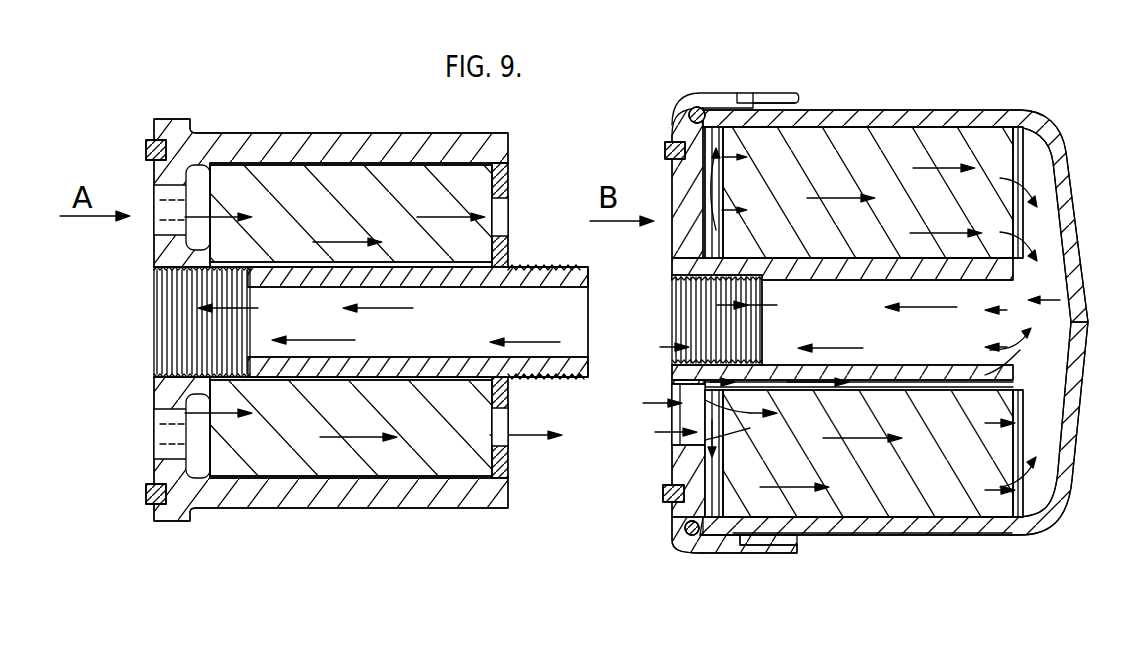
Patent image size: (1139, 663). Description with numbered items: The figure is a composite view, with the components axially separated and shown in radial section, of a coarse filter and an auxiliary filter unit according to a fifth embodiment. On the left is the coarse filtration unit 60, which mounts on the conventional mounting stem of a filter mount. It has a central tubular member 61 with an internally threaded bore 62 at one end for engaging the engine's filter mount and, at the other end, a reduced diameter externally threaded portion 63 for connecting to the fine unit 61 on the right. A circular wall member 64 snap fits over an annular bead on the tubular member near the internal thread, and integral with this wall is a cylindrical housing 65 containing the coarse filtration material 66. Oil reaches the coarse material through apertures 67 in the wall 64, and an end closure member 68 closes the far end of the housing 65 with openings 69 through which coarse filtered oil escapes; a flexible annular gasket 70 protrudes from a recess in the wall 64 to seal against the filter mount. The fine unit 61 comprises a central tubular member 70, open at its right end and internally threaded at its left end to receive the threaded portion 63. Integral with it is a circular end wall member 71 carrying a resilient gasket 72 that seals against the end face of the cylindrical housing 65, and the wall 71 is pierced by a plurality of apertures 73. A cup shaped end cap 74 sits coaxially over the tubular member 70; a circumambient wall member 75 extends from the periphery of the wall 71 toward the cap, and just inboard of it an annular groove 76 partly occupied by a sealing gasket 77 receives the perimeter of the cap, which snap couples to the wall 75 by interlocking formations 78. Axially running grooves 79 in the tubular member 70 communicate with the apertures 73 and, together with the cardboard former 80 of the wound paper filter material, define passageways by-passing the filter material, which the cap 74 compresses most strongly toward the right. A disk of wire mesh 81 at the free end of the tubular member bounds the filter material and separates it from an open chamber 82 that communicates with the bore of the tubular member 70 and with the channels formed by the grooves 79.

The coarse filtration unit 60 is at (457, 518).
The unit according to the invention 61 is at (452, 284).
The internally threaded bore 62 is at (174, 289).
The externally threaded portion 63 is at (568, 270).
The circular wall member 64 is at (162, 394).
The cylindrical housing 65 is at (252, 497).
The coarse filtration material 66 is at (355, 193).
The apertures 67 is at (170, 216).
The end closure member 68 is at (496, 476).
The openings 69 is at (509, 412).
The central tubular member 70 is at (149, 141).
The circular end wall member 71 is at (683, 152).
The resilient gasket 72 is at (668, 496).
The apertures 73 is at (690, 405).
The end cap 74 is at (1074, 455).
The circumambient wall member 75 is at (790, 93).
The annular groove 76 is at (693, 546).
The sealing gasket 77 is at (697, 108).
The snap interlocking formations 78 is at (740, 547).
The axially running grooves 79 is at (1000, 352).
The cardboard former 80 is at (1000, 398).
The wire mesh 81 is at (1025, 220).
The open chamber 82 is at (1062, 305).